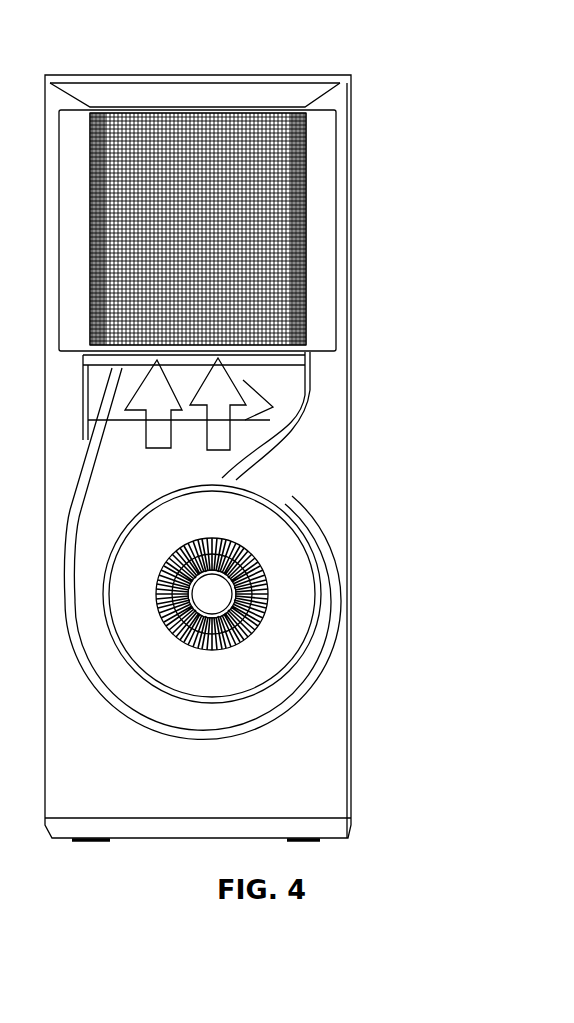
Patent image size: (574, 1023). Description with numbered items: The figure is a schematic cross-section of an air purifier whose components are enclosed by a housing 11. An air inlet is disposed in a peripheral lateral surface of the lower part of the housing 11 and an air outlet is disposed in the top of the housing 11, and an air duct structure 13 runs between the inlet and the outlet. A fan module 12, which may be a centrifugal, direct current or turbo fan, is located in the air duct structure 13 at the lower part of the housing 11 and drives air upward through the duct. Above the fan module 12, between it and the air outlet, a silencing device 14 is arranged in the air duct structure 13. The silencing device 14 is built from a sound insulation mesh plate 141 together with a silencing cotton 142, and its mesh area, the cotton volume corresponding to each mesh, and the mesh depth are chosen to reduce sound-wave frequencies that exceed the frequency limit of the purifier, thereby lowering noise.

The housing 11 is at (349, 542).
The fan module 12 is at (326, 636).
The air duct structure 13 is at (190, 462).
The silencing device 14 is at (264, 230).
The sound insulation mesh plate 141 is at (277, 217).
The silencing cotton 142 is at (313, 290).